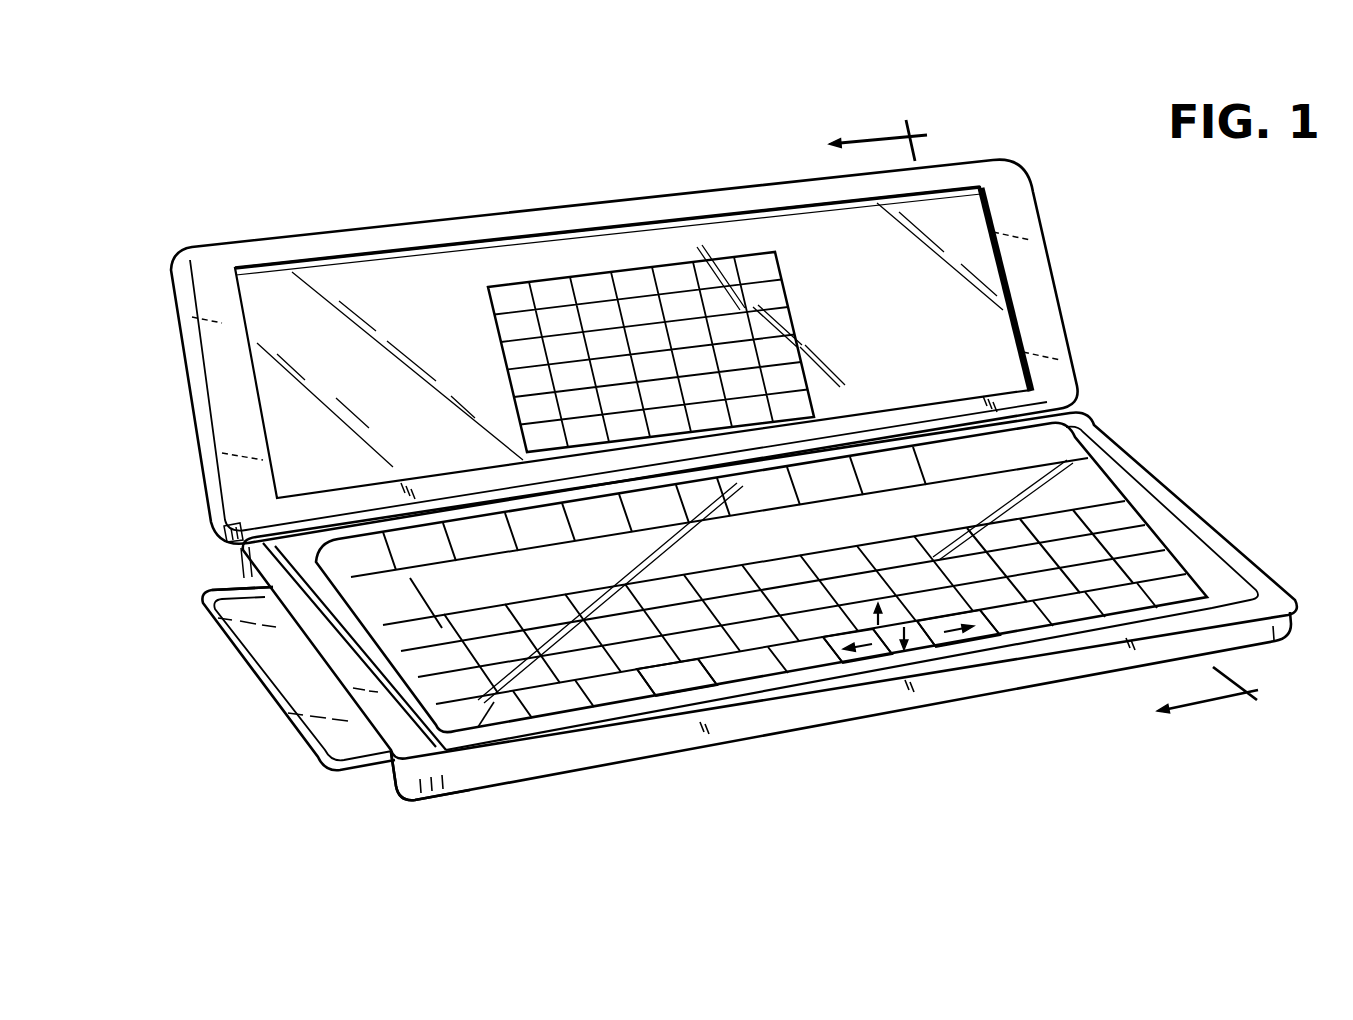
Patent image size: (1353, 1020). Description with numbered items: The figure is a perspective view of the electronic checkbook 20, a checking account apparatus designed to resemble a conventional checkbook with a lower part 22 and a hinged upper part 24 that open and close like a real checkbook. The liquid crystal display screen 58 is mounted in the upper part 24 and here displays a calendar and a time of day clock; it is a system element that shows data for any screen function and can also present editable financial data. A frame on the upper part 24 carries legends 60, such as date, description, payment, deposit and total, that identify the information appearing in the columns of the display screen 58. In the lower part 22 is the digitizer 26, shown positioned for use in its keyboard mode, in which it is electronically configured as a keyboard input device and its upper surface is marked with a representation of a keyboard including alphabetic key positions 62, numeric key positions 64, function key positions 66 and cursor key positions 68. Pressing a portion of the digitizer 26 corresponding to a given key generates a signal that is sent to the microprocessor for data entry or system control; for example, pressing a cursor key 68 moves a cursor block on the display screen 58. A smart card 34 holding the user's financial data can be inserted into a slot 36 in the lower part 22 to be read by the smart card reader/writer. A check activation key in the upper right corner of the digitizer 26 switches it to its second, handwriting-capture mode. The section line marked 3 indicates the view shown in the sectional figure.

The electronic checkbook 20 is at (336, 193).
The lower part 22 is at (483, 797).
The upper part 24 is at (1062, 274).
The digitizer 26 is at (761, 610).
The smart card 34 is at (281, 686).
The slot 36 is at (390, 765).
The liquid crystal display screen 58 is at (270, 330).
The legends 60 is at (578, 203).
The alphabetic key positions 62 is at (253, 664).
The numeric key positions 64 is at (1011, 628).
The function key positions 66 is at (679, 686).
The cursor key positions 68 is at (863, 654).
The section line 3- 3 is at (1035, 424).